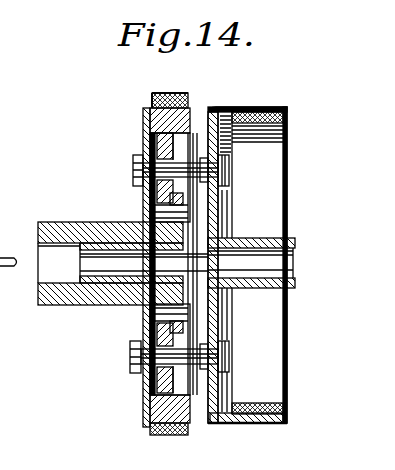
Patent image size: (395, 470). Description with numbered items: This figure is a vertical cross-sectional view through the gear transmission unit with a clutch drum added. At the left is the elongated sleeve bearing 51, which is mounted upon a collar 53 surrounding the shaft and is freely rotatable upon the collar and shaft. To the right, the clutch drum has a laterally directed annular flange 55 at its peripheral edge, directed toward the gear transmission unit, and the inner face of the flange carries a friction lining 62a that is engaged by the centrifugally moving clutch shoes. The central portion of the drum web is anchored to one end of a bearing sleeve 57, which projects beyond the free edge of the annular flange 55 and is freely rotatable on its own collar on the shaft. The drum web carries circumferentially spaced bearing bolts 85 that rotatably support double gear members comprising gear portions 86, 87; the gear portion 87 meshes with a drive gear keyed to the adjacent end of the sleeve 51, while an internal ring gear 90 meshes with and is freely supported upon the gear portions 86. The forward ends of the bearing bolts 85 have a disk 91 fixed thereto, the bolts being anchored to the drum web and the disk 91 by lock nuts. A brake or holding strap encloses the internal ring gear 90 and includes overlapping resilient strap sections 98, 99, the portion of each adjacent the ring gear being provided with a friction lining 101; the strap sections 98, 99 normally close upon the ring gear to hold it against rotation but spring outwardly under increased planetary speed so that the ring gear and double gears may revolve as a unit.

The sleeve bearing 51 is at (74, 300).
The collar 53 is at (144, 243).
The annular flange 55 is at (246, 108).
The bearing sleeve 57 is at (268, 240).
The friction lining 62a is at (272, 131).
The bearing bolt 85 is at (222, 350).
The gear portion 86 is at (152, 147).
The gear portion 87 is at (190, 152).
The internal ring gear 90 is at (191, 108).
The disk 91 is at (143, 127).
The strap section 98 is at (157, 93).
The strap section 99 is at (150, 96).
The friction lining 101 is at (151, 99).